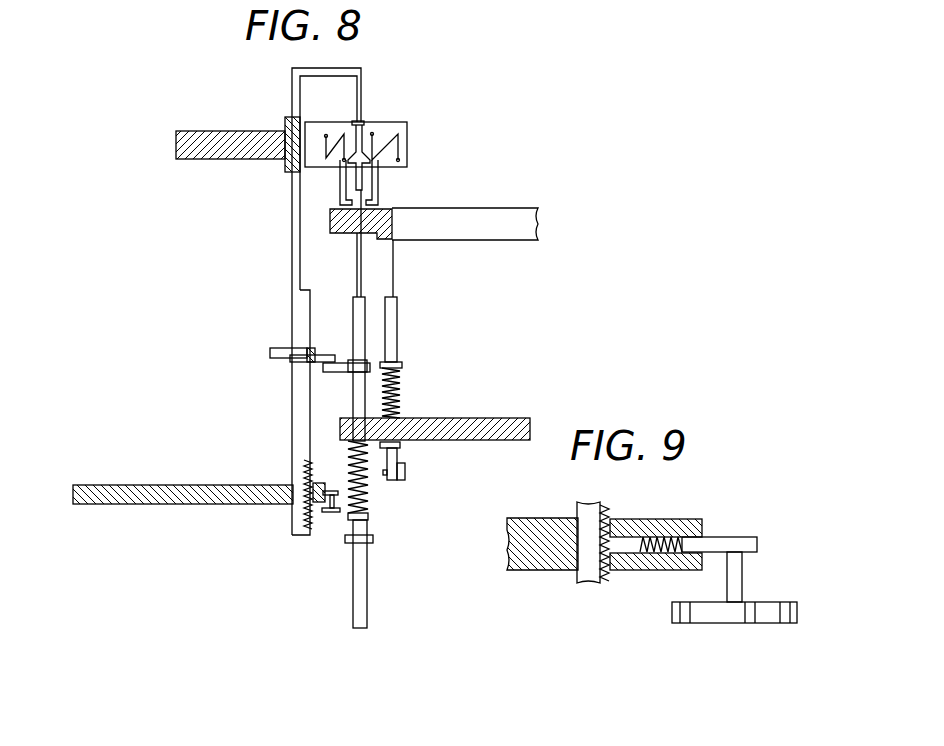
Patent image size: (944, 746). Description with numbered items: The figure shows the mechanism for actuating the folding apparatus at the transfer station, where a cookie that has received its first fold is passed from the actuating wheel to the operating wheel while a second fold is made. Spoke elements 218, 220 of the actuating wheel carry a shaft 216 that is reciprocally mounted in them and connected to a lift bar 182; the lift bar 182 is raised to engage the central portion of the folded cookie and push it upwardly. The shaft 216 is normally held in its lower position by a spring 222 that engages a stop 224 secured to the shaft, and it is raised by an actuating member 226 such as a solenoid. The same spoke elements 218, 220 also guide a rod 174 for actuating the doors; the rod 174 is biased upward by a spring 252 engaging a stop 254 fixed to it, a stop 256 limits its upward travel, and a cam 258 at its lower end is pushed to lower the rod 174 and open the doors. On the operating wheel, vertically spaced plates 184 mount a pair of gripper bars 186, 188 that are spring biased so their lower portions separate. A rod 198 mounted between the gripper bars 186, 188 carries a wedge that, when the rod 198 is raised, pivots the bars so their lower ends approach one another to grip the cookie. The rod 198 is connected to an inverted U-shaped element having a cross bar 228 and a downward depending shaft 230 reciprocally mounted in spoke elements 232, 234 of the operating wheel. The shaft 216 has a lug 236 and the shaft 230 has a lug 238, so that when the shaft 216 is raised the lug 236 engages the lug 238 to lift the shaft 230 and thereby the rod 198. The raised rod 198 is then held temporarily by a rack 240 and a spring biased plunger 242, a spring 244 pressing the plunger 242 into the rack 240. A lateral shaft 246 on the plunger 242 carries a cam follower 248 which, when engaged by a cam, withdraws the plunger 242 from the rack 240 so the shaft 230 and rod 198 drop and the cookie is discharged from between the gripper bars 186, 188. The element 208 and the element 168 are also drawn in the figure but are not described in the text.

In FIG. 8, the housing 208 is at (91, 8).
In FIG. 8, the cross bar 228 is at (325, 69).
In FIG. 8, the downward depending shaft 230 is at (292, 322).
In FIG. 8, the spoke element 232 is at (218, 138).
In FIG. 8, the rod 198 is at (362, 102).
In FIG. 8, the plate 184 is at (395, 128).
In FIG. 8, the gripper bar 186 is at (340, 185).
In FIG. 8, the gripper bar 188 is at (378, 190).
In FIG. 8, the lift bar 182 is at (345, 250).
In FIG. 8, the spoke element 218 is at (525, 240).
In FIG. 8, the shaft 216 is at (352, 318).
In FIG. 8, the drive rod 168 is at (397, 262).
In FIG. 8, the rod 174 is at (398, 322).
In FIG. 8, the stop 254 is at (405, 363).
In FIG. 8, the spring 252 is at (400, 392).
In FIG. 8, the spoke element 220 is at (505, 418).
In FIG. 8, the stop 256 is at (402, 445).
In FIG. 8, the cam 258 is at (405, 475).
In FIG. 8, the lug 238 is at (278, 358).
In FIG. 8, the lug 236 is at (325, 372).
In FIG. 8, the spoke element 234 is at (150, 486).
In FIG. 9, the spoke element 234 is at (540, 570).
In FIG. 8, the rack 240 is at (310, 505).
In FIG. 9, the rack 240 is at (607, 583).
In FIG. 8, the cam follower 248 is at (335, 513).
In FIG. 9, the cam follower 248 is at (715, 624).
In FIG. 8, the spring 222 is at (370, 497).
In FIG. 8, the stop 224 is at (372, 520).
In FIG. 8, the actuating member 226 is at (370, 595).
In FIG. 9, the spring 244 is at (660, 537).
In FIG. 9, the plunger 242 is at (735, 540).
In FIG. 9, the lateral shaft 246 is at (745, 568).